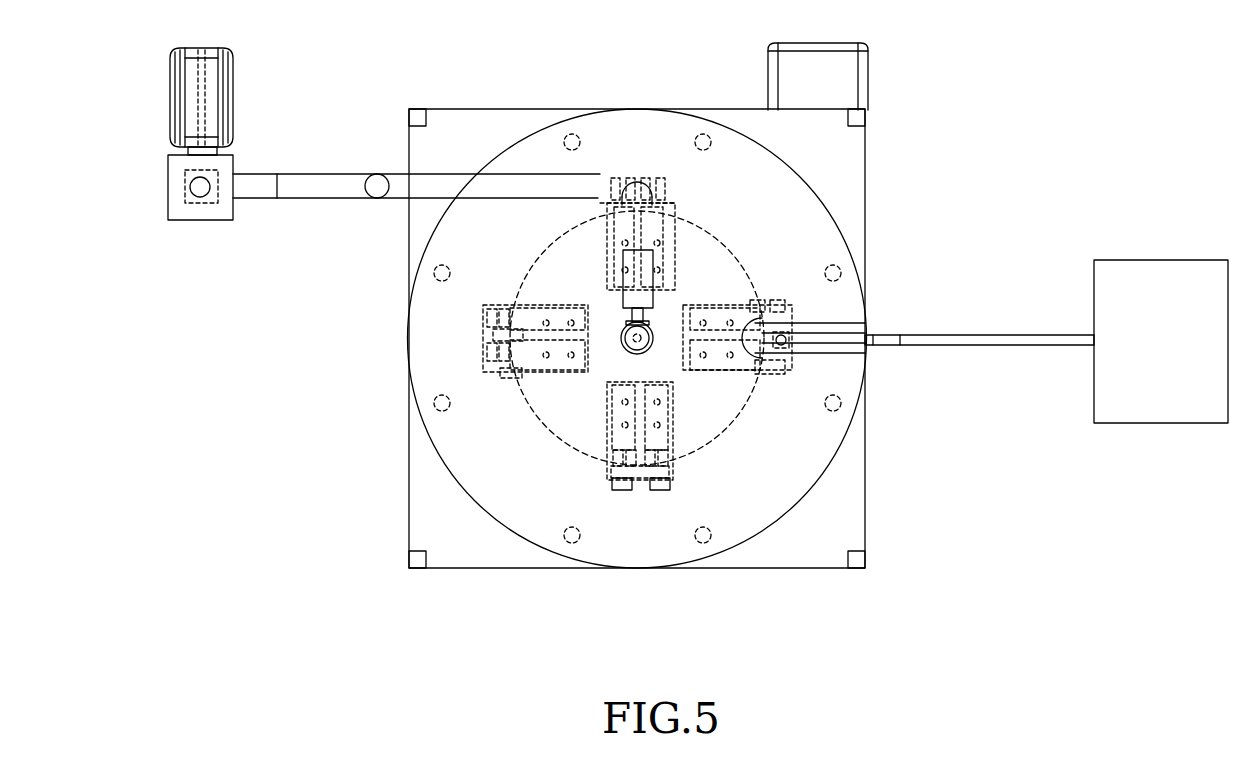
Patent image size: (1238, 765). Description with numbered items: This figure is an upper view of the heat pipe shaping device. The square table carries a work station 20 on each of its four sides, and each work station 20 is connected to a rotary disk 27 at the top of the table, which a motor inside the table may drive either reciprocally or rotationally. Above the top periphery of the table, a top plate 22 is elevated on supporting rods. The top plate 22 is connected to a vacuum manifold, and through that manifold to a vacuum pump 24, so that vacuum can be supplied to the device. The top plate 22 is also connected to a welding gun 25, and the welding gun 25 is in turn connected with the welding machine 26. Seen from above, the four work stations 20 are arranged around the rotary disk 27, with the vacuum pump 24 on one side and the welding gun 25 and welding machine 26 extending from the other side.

The work station 20 is at (633, 339).
The top plate 22 is at (637, 381).
The vacuum pump 24 is at (311, 134).
The welding gun 25 is at (979, 274).
The welding machine 26 is at (1161, 268).
The rotary disk 27 is at (648, 422).